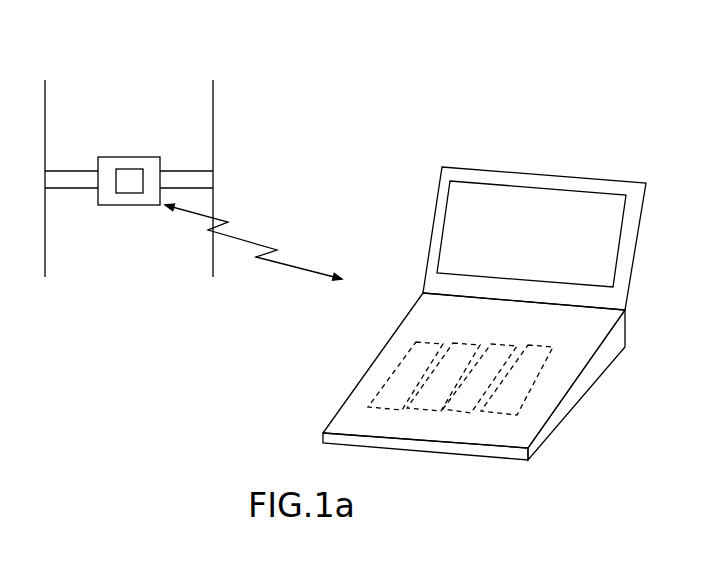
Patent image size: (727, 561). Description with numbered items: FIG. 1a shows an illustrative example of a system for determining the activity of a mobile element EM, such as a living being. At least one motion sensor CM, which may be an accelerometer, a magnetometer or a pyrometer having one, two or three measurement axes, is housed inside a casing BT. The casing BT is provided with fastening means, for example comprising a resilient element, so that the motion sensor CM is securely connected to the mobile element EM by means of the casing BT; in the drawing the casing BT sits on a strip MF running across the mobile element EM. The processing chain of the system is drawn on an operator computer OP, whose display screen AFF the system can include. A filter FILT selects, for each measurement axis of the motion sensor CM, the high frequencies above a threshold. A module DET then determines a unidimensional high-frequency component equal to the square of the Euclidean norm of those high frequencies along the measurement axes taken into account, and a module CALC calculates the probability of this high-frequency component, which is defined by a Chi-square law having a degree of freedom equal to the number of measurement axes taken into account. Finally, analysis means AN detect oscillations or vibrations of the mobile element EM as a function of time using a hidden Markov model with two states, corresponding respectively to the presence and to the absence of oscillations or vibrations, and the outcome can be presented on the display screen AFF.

The mobile element EM is at (214, 117).
The moving web / strip MF is at (63, 170).
The casing BT is at (120, 157).
The motion sensor CM is at (127, 193).
The display screen AFF is at (493, 185).
The operator computer OP is at (585, 390).
The filter FILT is at (420, 343).
The module for determining a unidimensional high-frequency component DET is at (465, 345).
The module for calculating the probability of the high-frequency component CALC is at (495, 347).
The analysis means AN is at (540, 349).